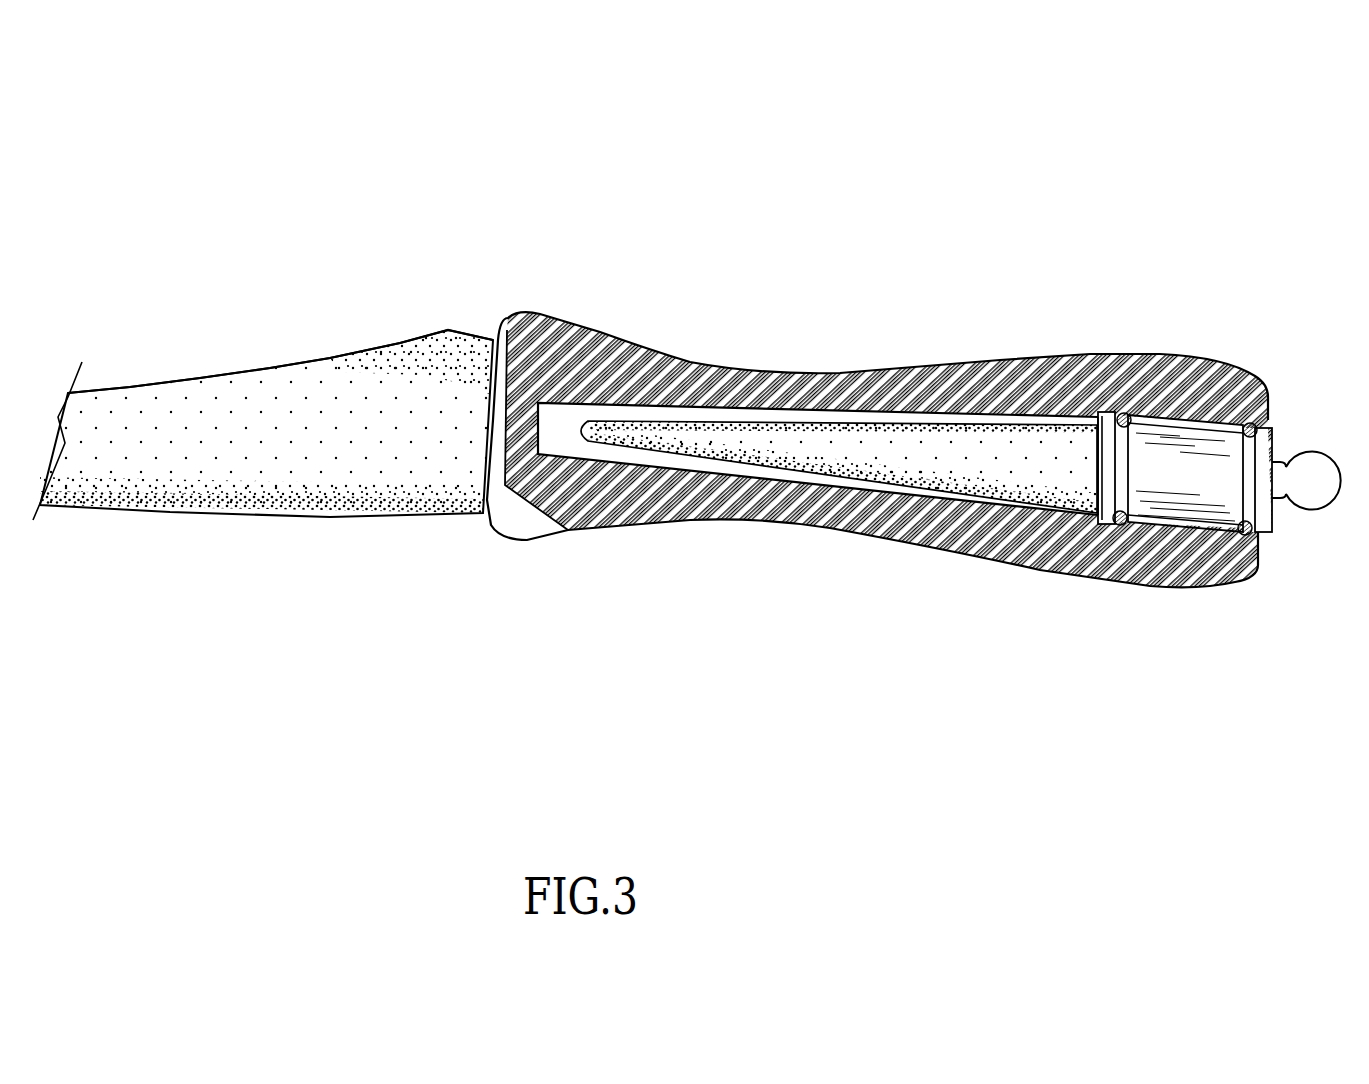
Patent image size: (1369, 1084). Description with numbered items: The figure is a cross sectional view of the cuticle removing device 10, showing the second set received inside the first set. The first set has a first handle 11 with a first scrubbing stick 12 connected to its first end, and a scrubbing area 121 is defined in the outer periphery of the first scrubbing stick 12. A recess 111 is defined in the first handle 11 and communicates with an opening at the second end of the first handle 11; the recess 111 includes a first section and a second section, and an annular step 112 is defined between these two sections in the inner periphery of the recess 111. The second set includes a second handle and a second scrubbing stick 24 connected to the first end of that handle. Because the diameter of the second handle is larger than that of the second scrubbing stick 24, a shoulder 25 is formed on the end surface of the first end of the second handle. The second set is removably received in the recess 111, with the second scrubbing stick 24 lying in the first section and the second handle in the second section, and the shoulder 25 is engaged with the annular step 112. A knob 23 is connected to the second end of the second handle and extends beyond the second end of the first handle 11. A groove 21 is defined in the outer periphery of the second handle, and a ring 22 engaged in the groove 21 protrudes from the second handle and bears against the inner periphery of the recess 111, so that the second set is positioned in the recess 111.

The cuticle removing device 10 is at (603, 230).
The first handle 11 is at (842, 373).
The recess 111 is at (650, 459).
The annular step 112 is at (1118, 445).
The first scrubbing stick 12 is at (253, 513).
The scrubbing area 121 is at (255, 370).
The groove 21 is at (1150, 415).
The ring 22 is at (1130, 412).
The knob 23 is at (1297, 497).
The second scrubbing stick 24 is at (912, 420).
The shoulder 25 is at (1092, 487).